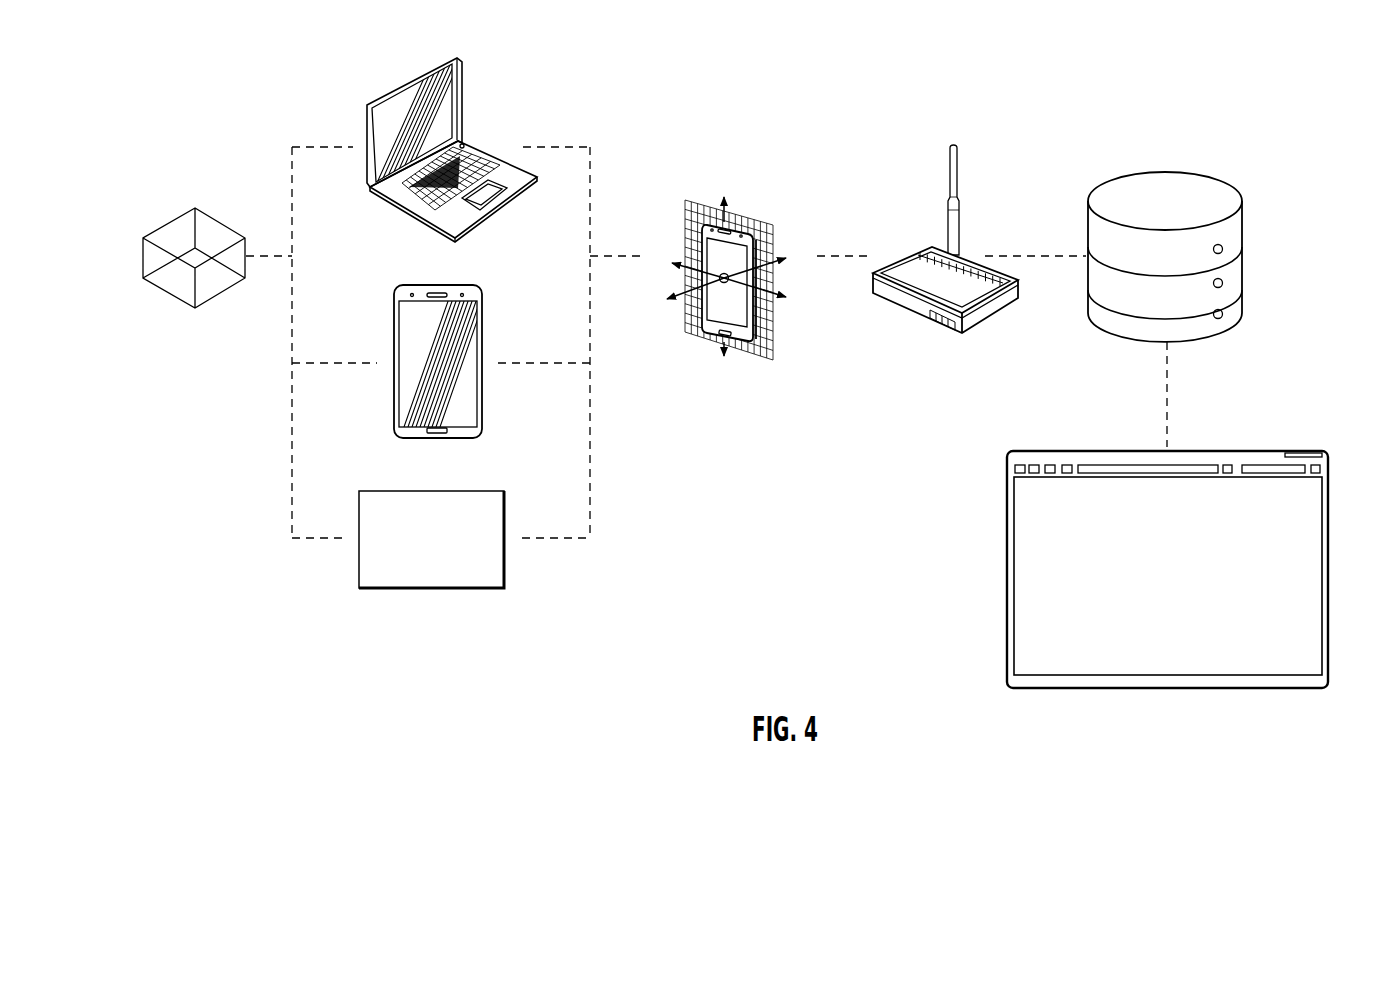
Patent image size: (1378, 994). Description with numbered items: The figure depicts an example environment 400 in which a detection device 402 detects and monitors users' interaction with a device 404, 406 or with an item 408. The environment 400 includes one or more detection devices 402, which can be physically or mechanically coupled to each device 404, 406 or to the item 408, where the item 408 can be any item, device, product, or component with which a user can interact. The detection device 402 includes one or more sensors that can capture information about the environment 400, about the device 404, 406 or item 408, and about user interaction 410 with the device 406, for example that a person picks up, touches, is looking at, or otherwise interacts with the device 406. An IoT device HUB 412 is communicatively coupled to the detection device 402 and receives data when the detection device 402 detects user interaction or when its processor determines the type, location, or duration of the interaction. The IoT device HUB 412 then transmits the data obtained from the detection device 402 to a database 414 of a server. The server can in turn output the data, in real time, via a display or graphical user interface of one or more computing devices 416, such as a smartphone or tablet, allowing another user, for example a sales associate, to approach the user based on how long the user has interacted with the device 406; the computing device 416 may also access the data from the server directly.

The environment 400 is at (225, 95).
The detection device 402 is at (160, 213).
The device 404 is at (488, 106).
The device 406 is at (377, 317).
The item 408 is at (350, 512).
The user interaction 410 is at (686, 191).
The IoT device HUB 412 is at (904, 226).
The database 414 is at (1101, 178).
The computing device 416 is at (1056, 437).